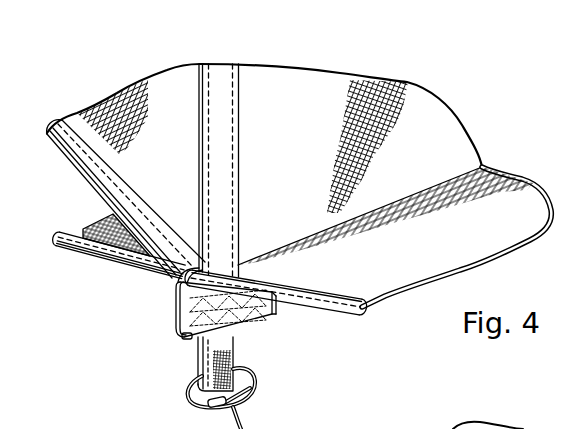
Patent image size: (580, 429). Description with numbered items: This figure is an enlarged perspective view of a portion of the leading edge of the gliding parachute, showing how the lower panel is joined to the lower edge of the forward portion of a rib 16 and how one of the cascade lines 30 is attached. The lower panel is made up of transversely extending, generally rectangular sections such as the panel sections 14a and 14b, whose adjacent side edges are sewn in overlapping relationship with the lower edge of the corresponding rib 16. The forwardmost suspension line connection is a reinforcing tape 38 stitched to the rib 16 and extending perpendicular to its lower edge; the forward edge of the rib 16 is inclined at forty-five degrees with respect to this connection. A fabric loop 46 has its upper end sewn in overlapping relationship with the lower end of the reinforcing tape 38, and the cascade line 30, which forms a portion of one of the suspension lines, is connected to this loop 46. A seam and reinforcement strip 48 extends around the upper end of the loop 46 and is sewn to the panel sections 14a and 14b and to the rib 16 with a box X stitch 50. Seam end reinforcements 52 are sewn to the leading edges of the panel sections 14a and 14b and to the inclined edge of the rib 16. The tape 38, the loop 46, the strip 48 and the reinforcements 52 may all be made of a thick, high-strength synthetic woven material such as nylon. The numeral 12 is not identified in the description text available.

The carrier body 12 is at (575, 428).
The lower panel section 14a is at (103, 215).
The lower panel section 14b is at (500, 203).
The rib 16 is at (340, 88).
The cascade line 30 is at (250, 420).
The reinforcing tape 38 is at (220, 82).
The fabric loop 46 is at (198, 348).
The seam and reinforcement strip 48 is at (182, 307).
The box X stitch 50 is at (247, 310).
The seam end reinforcement 52 is at (133, 207).